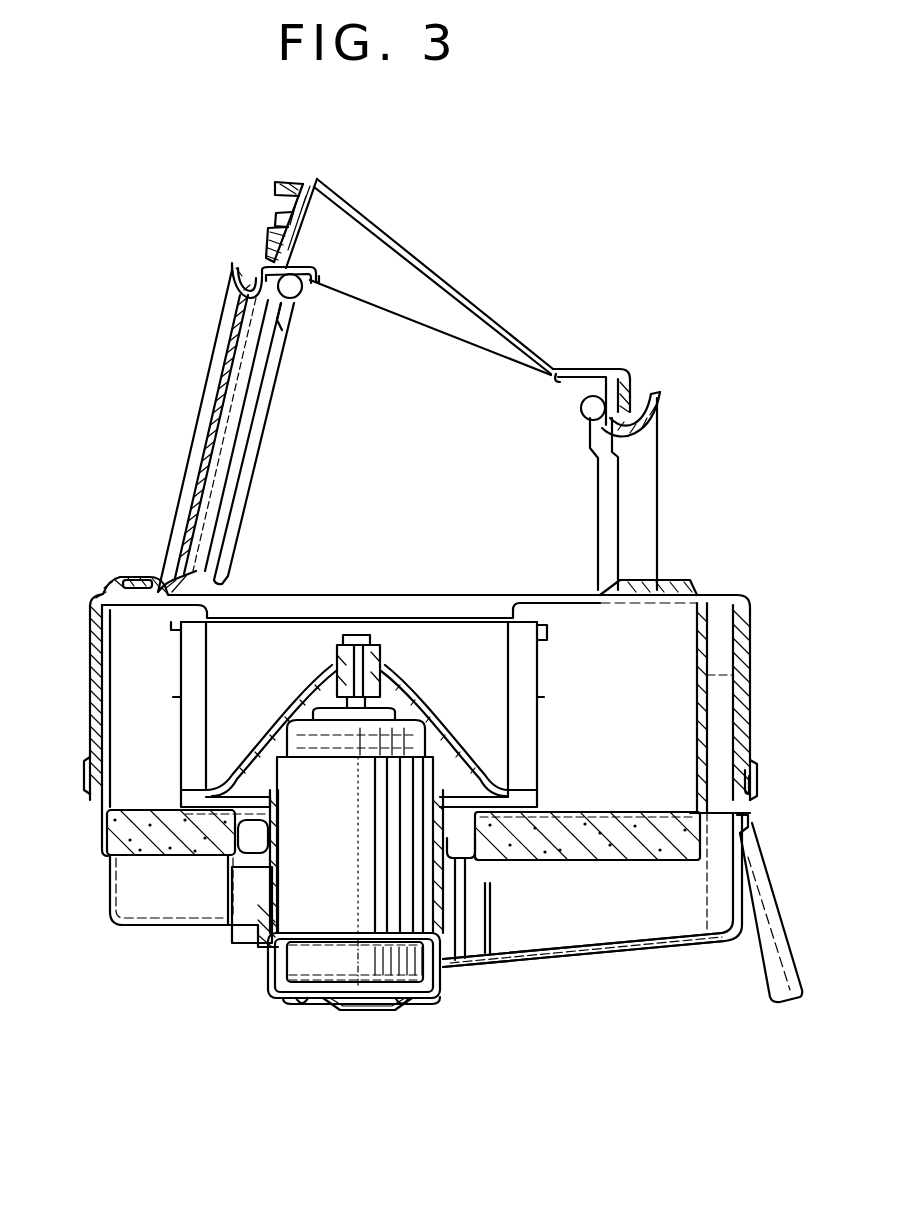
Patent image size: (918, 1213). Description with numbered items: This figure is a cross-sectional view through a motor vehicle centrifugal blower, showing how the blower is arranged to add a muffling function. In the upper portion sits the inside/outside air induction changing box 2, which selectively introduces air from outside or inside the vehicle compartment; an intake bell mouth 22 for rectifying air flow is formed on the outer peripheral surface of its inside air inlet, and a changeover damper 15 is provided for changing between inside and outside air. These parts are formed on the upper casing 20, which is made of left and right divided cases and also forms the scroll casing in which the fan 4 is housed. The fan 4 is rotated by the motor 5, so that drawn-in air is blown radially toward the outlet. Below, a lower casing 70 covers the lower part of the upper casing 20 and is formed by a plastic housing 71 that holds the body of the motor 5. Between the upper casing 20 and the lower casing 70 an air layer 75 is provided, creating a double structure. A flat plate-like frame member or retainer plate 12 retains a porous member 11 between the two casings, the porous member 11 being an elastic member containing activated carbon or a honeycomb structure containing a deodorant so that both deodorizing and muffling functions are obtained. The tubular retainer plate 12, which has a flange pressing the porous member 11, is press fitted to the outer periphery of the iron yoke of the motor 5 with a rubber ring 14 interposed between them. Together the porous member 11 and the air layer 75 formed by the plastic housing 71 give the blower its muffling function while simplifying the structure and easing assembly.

The inside/outside air induction changing box 2 is at (526, 378).
The intake bell mouth 22 is at (241, 266).
The changeover damper 15 is at (274, 407).
The upper casing 20 is at (752, 694).
The fan 4 is at (187, 678).
The motor 5 is at (268, 975).
The porous member 11 is at (138, 862).
The air layer 75 is at (168, 912).
The retainer plate 12 is at (490, 842).
The rubber ring 14 is at (457, 965).
The plastic housing 71 is at (450, 978).
The lower casing 70 is at (656, 950).